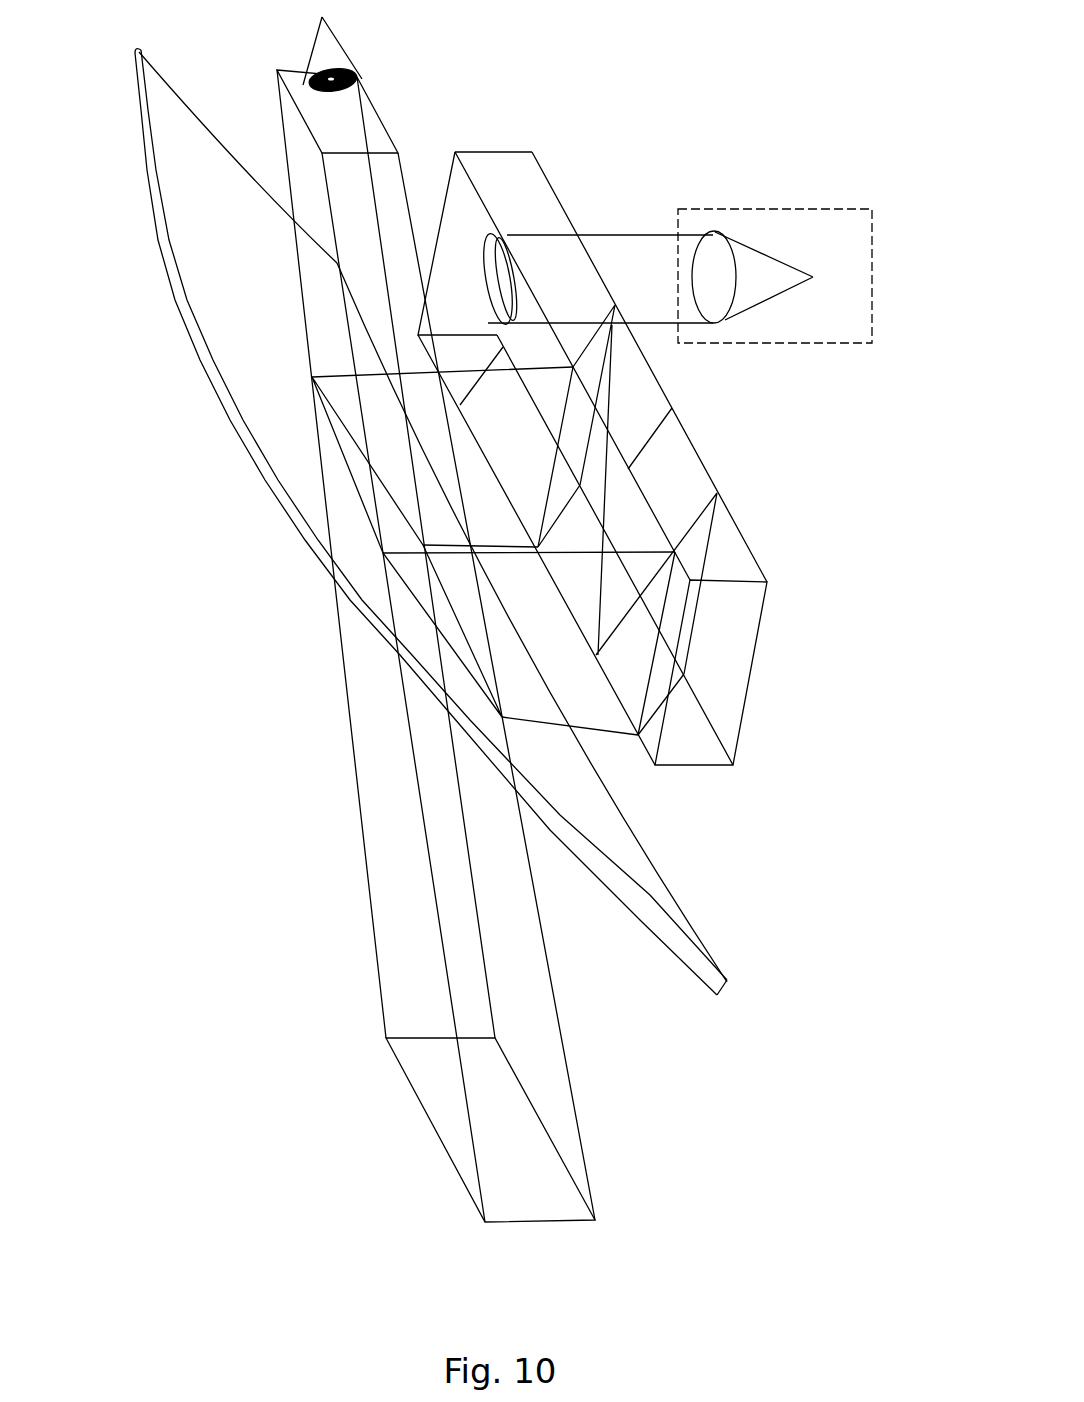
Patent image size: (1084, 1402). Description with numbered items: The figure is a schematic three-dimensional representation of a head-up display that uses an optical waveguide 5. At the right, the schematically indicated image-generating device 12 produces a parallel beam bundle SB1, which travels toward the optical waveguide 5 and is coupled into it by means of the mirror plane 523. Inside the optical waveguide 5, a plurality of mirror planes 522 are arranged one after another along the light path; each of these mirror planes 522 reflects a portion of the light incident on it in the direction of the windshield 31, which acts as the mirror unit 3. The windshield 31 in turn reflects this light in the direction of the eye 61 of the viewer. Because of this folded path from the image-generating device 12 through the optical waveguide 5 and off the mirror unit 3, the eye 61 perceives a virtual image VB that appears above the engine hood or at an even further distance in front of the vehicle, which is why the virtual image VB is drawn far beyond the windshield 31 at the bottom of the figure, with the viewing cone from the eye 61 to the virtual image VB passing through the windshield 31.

The eye 61 is at (312, 50).
The mirror unit 3 is at (431, 522).
The windshield 31 is at (236, 410).
The optical waveguide 5 is at (494, 150).
The mirror plane 523 is at (497, 235).
The parallel beam bundle SB1 is at (613, 233).
The image-generating device 12 is at (773, 208).
The mirror planes 522 is at (573, 366).
The virtual image VB is at (538, 1225).